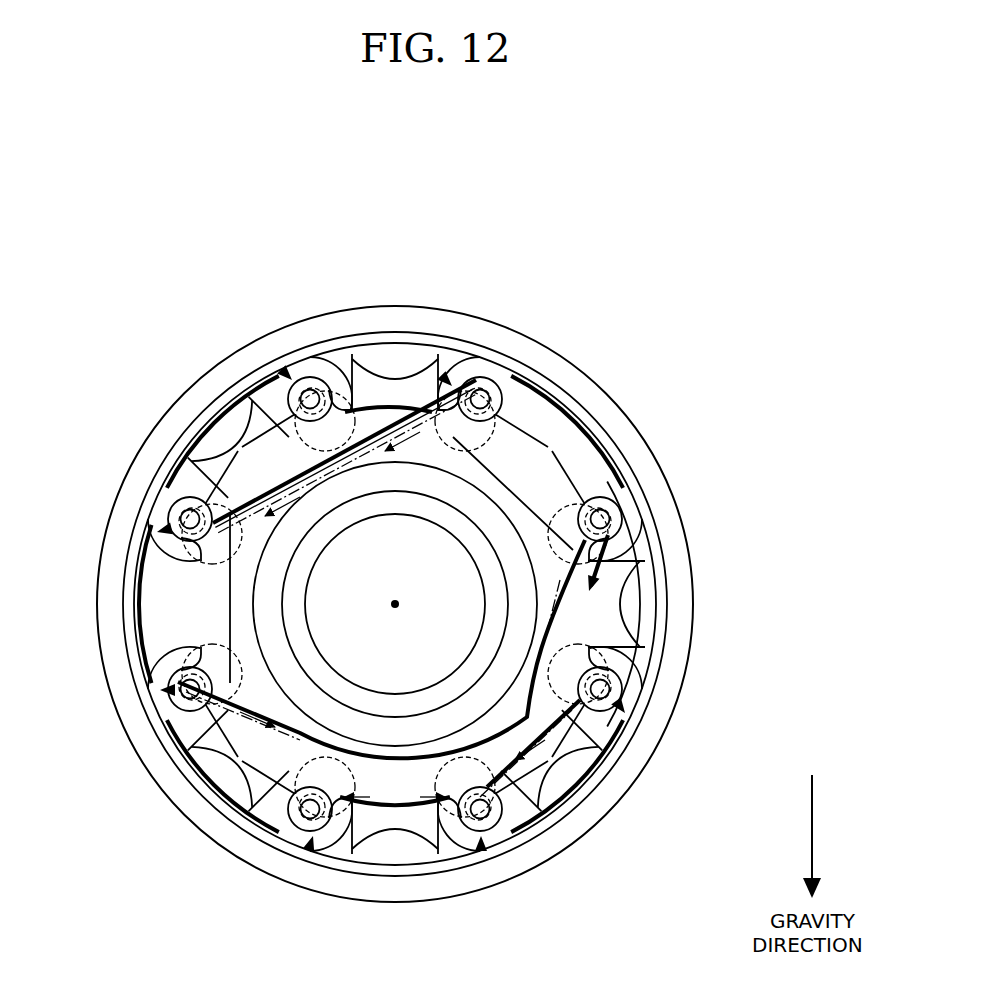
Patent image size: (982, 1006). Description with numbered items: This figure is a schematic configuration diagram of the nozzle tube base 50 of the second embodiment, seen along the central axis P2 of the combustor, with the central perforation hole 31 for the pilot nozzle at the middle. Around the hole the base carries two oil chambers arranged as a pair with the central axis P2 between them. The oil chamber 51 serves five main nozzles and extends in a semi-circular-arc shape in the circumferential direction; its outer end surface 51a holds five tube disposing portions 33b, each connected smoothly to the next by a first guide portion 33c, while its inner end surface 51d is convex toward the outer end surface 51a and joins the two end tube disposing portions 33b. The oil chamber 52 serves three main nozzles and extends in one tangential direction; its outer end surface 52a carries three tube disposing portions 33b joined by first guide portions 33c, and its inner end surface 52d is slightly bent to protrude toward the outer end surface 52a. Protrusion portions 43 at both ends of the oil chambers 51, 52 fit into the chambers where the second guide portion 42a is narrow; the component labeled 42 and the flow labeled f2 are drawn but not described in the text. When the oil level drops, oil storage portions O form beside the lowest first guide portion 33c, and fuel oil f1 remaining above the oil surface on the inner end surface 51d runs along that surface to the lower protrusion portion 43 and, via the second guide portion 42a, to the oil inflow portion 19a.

The nozzle tube base 50 is at (637, 267).
The central perforation hole 31 is at (450, 669).
The tube disposing portion 33b is at (416, 597).
The oil inflow portion 19a is at (292, 385).
The first guide portion 33c is at (362, 412).
The pin 42 is at (310, 388).
The second guide portion 42a is at (332, 392).
The protrusion portion 43 is at (452, 380).
The oil chamber 51 is at (575, 590).
The outer end surface 51a is at (545, 700).
The inner end surface 51d is at (560, 762).
The oil chamber 52 is at (397, 404).
The outer end surface 52a is at (410, 424).
The inner end surface 52d is at (415, 412).
The fuel oil f1 is at (337, 455).
The second force f2 is at (240, 508).
The oil storage portion O is at (160, 478).
The central axis P2 is at (391, 590).